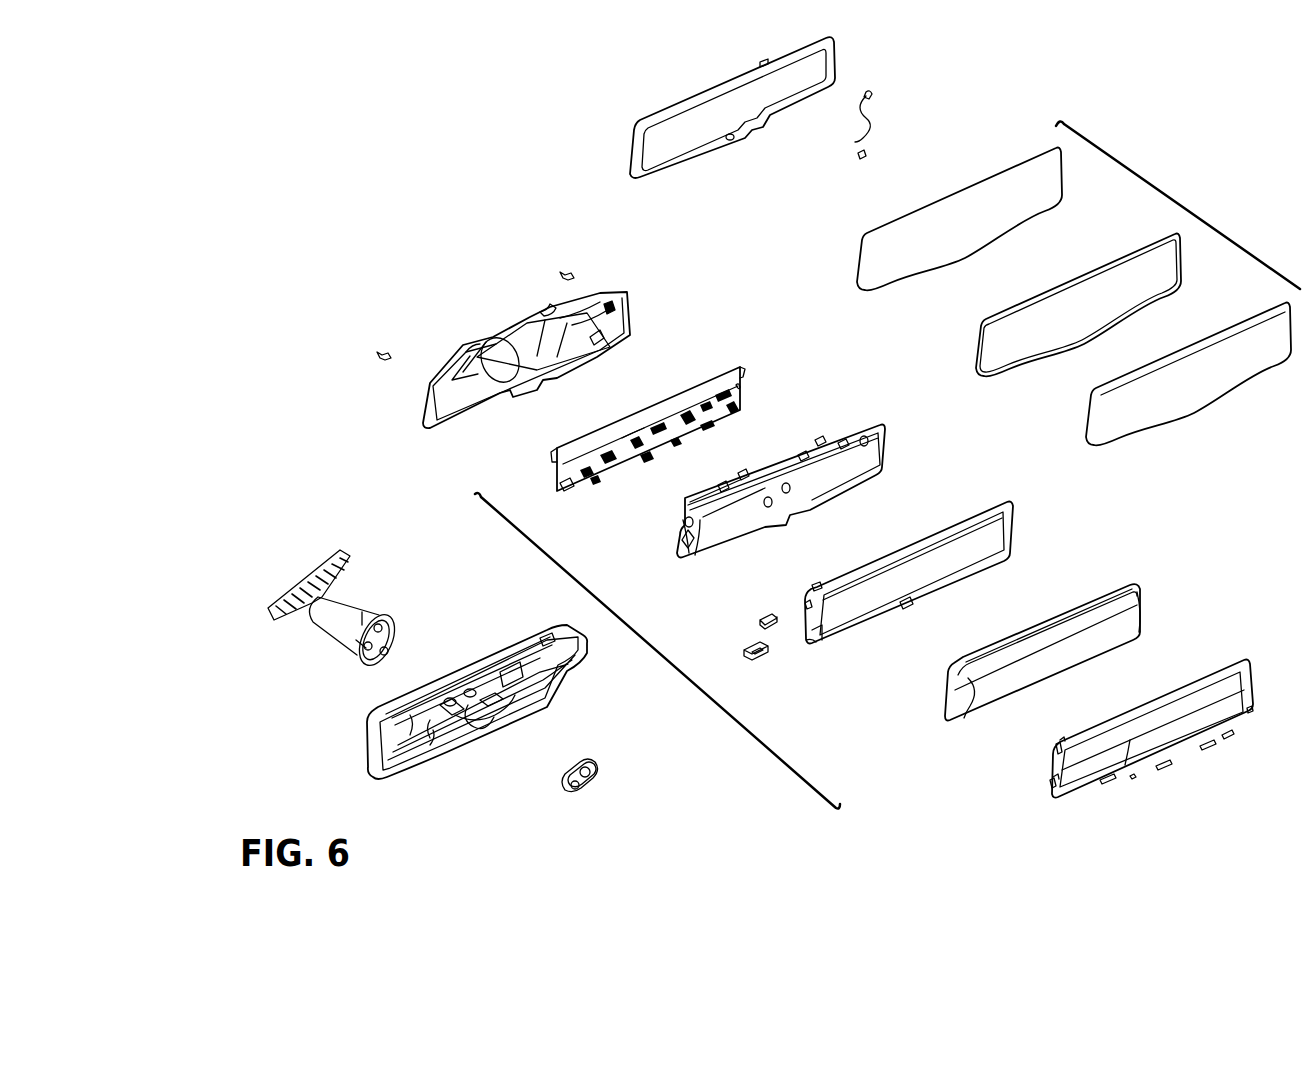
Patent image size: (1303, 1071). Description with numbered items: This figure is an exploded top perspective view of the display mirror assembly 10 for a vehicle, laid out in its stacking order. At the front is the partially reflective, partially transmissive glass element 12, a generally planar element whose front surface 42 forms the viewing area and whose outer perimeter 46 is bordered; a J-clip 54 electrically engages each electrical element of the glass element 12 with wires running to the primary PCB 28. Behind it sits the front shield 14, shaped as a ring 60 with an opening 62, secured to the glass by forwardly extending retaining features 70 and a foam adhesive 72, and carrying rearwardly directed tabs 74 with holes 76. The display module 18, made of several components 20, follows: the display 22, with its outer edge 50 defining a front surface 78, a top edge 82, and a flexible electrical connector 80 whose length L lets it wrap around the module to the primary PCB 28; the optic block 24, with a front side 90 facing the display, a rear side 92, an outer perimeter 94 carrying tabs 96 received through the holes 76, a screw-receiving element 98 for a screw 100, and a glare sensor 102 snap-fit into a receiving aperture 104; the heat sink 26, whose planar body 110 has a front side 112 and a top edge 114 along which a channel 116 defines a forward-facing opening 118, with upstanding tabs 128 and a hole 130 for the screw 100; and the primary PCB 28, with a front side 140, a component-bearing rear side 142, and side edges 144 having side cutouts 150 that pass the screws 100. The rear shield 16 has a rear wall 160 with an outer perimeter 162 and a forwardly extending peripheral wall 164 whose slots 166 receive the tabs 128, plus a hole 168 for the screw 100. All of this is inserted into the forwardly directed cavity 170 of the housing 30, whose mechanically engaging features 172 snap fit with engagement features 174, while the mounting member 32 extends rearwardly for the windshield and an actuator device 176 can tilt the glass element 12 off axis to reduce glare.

The display mirror assembly 10 is at (1171, 106).
The partially reflective, partially transmissive element 12 is at (1177, 196).
The front shield 14 is at (1118, 721).
The rear shield 16 is at (405, 406).
The display module 18 is at (657, 651).
The components 20 is at (715, 420).
The display 22 is at (1041, 654).
The optic block 24 is at (927, 541).
The heat sink 26 is at (825, 472).
The primary PCB 28 is at (752, 348).
The housing 30 is at (372, 738).
The mounting member 32 is at (338, 628).
The front surface 42 is at (1262, 365).
The outer perimeter 46 is at (1228, 345).
The outer edge 50 is at (1136, 635).
The J-clip 54 is at (880, 116).
The ring 60 is at (1235, 660).
The opening 62 is at (1128, 765).
The retaining features 70 is at (1205, 745).
The foam adhesive 72 is at (832, 65).
The rearwardly directed tabs 74 is at (1056, 748).
The holes 76 is at (1058, 738).
The front surface 78 is at (1125, 630).
The flexible electrical connector 80 is at (1105, 592).
The top edge 82 is at (975, 705).
The front side 90 is at (1000, 525).
The rear side 92 is at (806, 600).
The outer perimeter 94 is at (840, 640).
The tabs 96 is at (810, 643).
The screw-receiving element 98 is at (815, 585).
The screw 100 is at (380, 350).
The glare sensor 102 is at (758, 622).
The receiving aperture 104 is at (907, 606).
The body 110 is at (880, 462).
The front side 112 is at (720, 540).
The top edge 114 is at (700, 495).
The channel 116 is at (700, 545).
The forward-facing opening 118 is at (820, 440).
The tabs 128 is at (842, 440).
The hole 130 is at (870, 442).
The front side 140 is at (655, 452).
The rear side 142 is at (650, 418).
The side edges 144 is at (742, 370).
The side cutouts 150 is at (740, 392).
The rear wall 160 is at (470, 412).
The outer perimeter 162 is at (612, 333).
The peripheral wall 164 is at (595, 300).
The slots 166 is at (490, 345).
The hole 168 is at (620, 308).
The cavity 170 is at (512, 725).
The mechanically engaging features 172 is at (560, 710).
The engagement features 174 is at (685, 540).
The actuator device 176 is at (758, 656).
The length L is at (1035, 615).